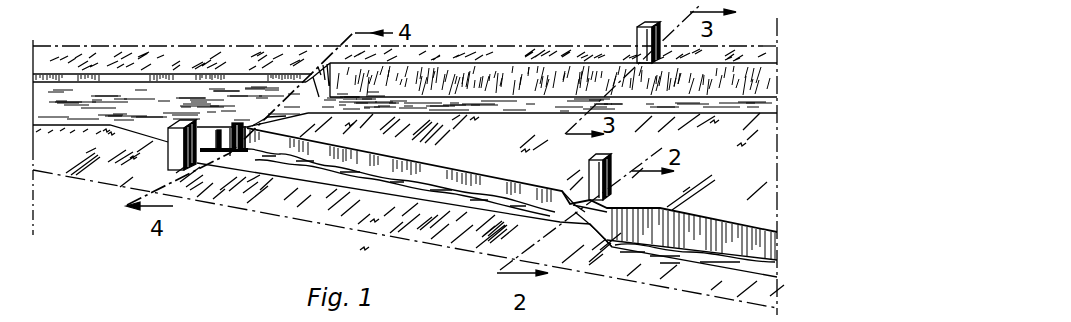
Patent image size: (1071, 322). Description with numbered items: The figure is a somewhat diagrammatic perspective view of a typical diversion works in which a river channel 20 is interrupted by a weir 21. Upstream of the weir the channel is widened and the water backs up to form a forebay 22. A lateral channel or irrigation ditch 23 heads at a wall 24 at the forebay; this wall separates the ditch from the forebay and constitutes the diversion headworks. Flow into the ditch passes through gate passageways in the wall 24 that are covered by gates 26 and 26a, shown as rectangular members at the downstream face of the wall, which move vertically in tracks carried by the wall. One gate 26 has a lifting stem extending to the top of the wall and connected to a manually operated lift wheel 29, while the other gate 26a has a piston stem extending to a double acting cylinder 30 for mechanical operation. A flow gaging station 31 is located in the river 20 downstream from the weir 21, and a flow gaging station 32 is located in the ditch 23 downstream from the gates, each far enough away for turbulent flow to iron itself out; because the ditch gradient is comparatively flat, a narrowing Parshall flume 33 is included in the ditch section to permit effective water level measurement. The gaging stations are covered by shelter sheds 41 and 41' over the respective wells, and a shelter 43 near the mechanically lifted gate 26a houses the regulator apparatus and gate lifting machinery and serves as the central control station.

The river channel 20 is at (128, 92).
The weir 21 is at (262, 122).
The forebay 22 is at (150, 133).
The lateral channel or irrigation ditch 23 is at (347, 175).
The wall 24 is at (235, 122).
The gate 26 is at (280, 123).
The gate 26a is at (200, 159).
The lift wheel 29 is at (238, 140).
The double acting cylinder 30 is at (219, 131).
The flow gaging station 31 is at (552, 114).
The flow gaging station 32 is at (553, 197).
The Parshall flume 33 is at (595, 218).
The shelter shed 41 is at (586, 175).
The shelter shed 41' is at (636, 40).
The shelter 43 is at (167, 162).